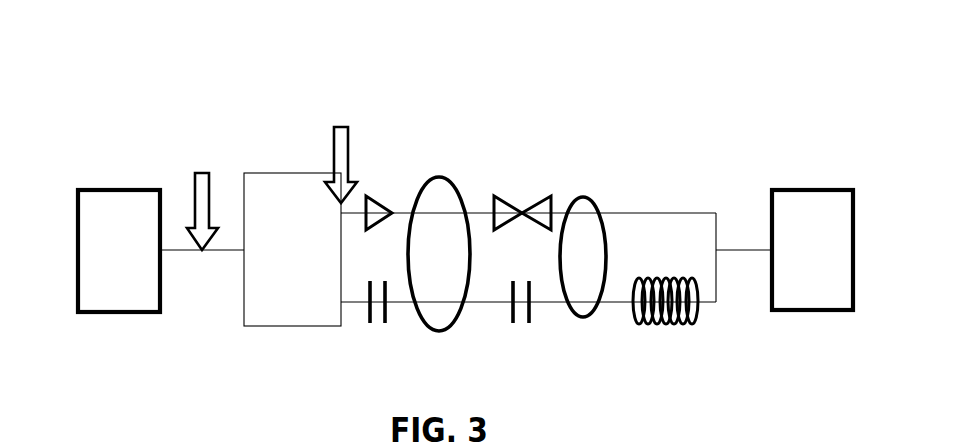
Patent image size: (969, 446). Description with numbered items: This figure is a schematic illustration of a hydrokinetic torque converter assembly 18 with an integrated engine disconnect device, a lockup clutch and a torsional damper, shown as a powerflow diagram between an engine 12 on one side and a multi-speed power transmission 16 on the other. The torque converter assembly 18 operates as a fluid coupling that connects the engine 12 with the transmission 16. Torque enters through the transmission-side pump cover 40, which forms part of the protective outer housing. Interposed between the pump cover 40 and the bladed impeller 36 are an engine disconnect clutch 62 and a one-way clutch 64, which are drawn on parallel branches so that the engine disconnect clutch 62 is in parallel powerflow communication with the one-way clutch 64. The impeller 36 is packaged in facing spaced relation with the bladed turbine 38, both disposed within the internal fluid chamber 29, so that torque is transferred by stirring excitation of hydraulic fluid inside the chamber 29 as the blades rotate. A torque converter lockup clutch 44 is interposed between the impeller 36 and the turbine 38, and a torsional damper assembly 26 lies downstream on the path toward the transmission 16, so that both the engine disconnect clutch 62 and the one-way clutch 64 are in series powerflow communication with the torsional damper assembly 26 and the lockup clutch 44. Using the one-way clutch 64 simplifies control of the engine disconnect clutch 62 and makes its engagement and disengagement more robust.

The hydrokinetic torque converter assembly 18 is at (175, 83).
The engine 12 is at (97, 188).
The multi-speed power transmission 16 is at (788, 190).
The pump cover 40 is at (260, 173).
The one-way clutch 64 is at (377, 200).
The bladed impeller 36 is at (453, 178).
The internal fluid chamber 29 is at (509, 198).
The bladed turbine 38 is at (596, 198).
The engine disconnect clutch 62 is at (361, 324).
The torque converter clutch 44 is at (505, 325).
The torsional damper assembly 26 is at (652, 326).